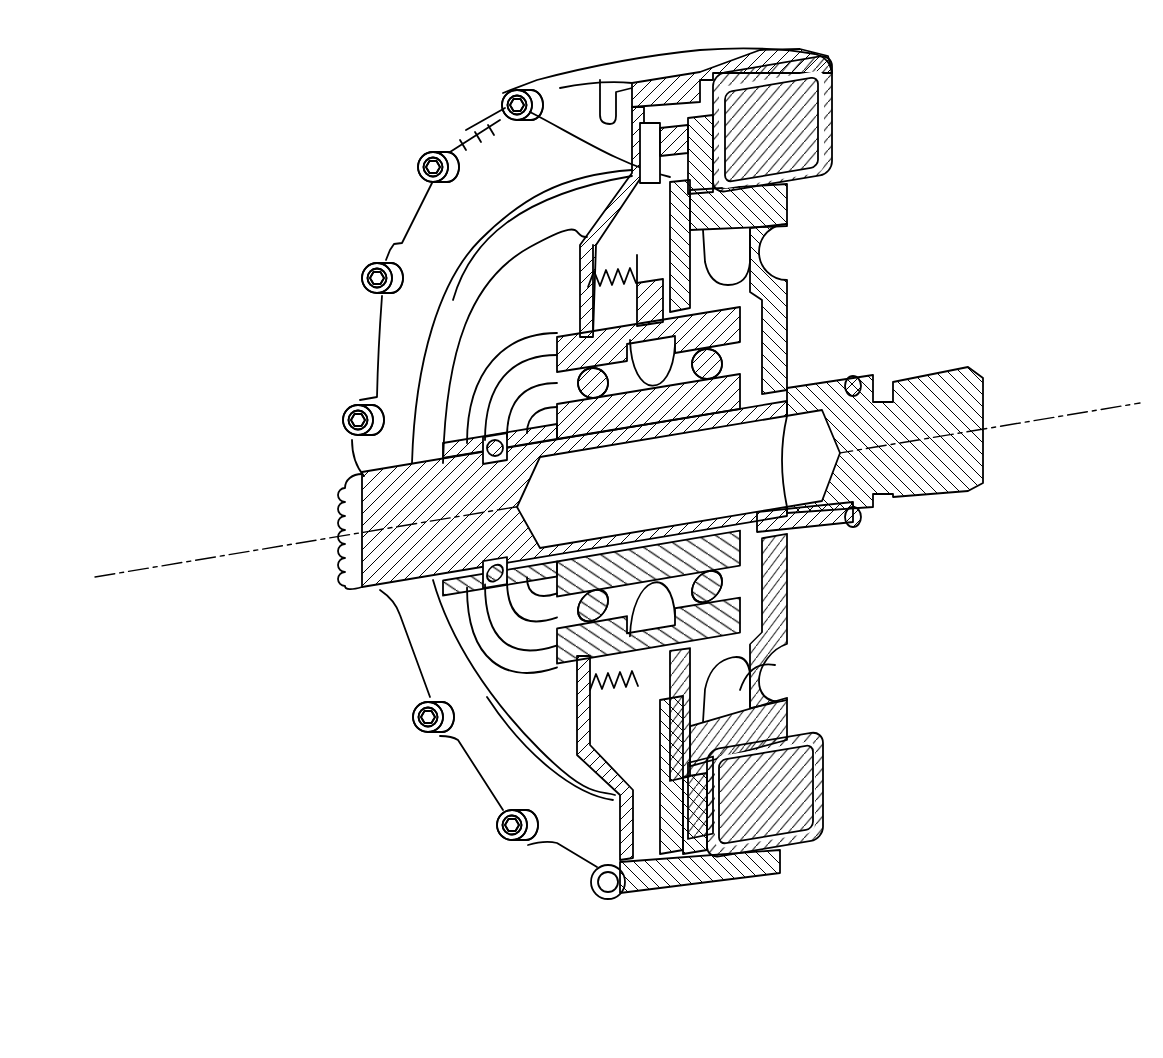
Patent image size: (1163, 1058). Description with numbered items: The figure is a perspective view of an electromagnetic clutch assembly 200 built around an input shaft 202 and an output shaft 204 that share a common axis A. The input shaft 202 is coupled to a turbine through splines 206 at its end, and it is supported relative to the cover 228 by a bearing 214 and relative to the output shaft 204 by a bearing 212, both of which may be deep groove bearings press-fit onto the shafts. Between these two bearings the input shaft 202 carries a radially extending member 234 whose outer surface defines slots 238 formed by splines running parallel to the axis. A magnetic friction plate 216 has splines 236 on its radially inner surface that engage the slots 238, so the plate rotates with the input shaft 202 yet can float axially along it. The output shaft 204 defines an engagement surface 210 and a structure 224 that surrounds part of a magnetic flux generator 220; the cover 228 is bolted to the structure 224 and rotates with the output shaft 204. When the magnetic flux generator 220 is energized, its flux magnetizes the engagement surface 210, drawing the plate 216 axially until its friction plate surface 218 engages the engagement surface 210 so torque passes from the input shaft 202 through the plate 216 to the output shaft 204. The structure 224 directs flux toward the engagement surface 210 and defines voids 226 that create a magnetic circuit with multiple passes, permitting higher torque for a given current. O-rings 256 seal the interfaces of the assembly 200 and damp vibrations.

The electromagnetic clutch assembly 200 is at (1044, 86).
The input shaft 202 is at (290, 620).
The output shaft 204 is at (1000, 384).
The splines 206 is at (330, 498).
The engagement surface 210 is at (502, 104).
The bearing 212 is at (772, 630).
The bearing 214 is at (757, 680).
The magnetic friction plate 216 is at (586, 246).
The friction plate surface 218 is at (598, 92).
The magnetic flux generator 220 is at (772, 136).
The structure 224 is at (790, 745).
The voids 226 is at (708, 763).
The cover 228 is at (490, 752).
The radially extending member 234 is at (762, 705).
The splines 236 is at (592, 265).
The slots 238 is at (580, 309).
The o-rings 256 is at (857, 527).